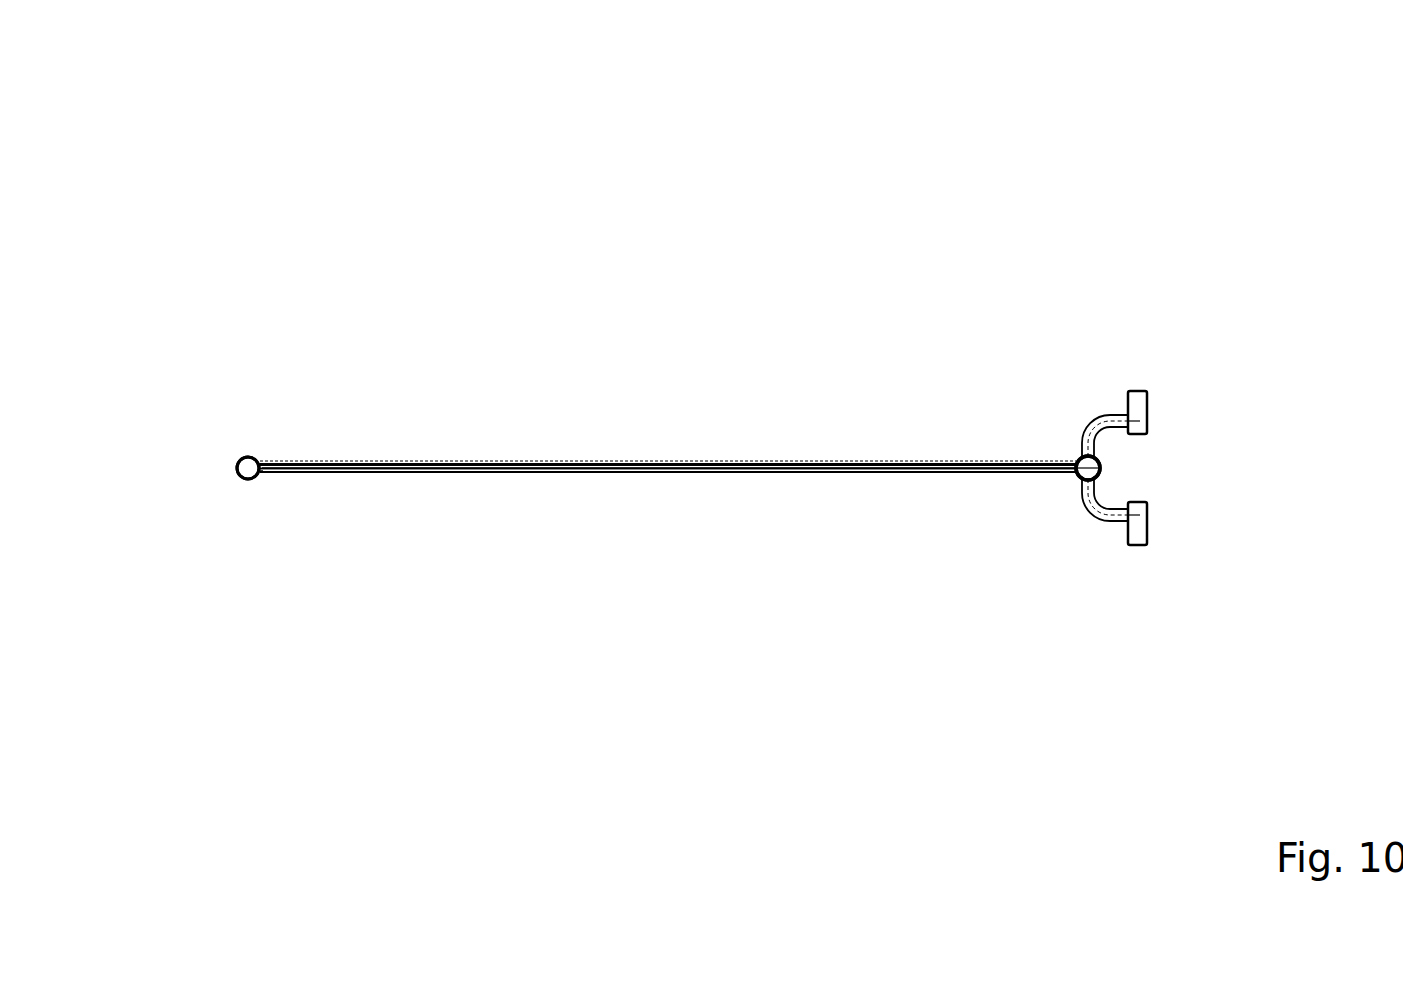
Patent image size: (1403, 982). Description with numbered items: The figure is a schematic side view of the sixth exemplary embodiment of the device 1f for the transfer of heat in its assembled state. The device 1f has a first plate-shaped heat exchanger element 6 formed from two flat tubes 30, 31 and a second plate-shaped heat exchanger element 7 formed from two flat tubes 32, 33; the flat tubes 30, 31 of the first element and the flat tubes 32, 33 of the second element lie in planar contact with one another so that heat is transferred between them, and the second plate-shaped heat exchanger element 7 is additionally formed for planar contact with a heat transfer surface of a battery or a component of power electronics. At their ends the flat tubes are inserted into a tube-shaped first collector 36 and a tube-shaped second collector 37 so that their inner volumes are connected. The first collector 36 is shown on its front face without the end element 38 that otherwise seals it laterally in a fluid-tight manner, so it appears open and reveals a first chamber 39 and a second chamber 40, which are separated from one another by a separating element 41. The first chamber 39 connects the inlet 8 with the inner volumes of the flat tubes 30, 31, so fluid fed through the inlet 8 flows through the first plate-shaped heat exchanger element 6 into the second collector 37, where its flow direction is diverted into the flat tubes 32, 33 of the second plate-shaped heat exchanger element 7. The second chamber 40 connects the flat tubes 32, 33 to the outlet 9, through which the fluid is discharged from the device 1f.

The device for the transfer of heat 1f is at (1070, 157).
The first plate-shaped heat exchanger element 6 is at (883, 458).
The second plate-shaped heat exchanger element 7 is at (823, 472).
The inlet 8 is at (1147, 405).
The outlet 9 is at (1147, 535).
The flat tube 30 is at (589, 462).
The flat tube 31 is at (589, 462).
The flat tube 32 is at (440, 472).
The flat tube 33 is at (440, 472).
The first collector 36 is at (1080, 490).
The second collector 37 is at (222, 465).
The end element 38 is at (246, 455).
The first chamber 39 is at (1100, 464).
The second chamber 40 is at (1100, 470).
The separating element 41 is at (1075, 443).